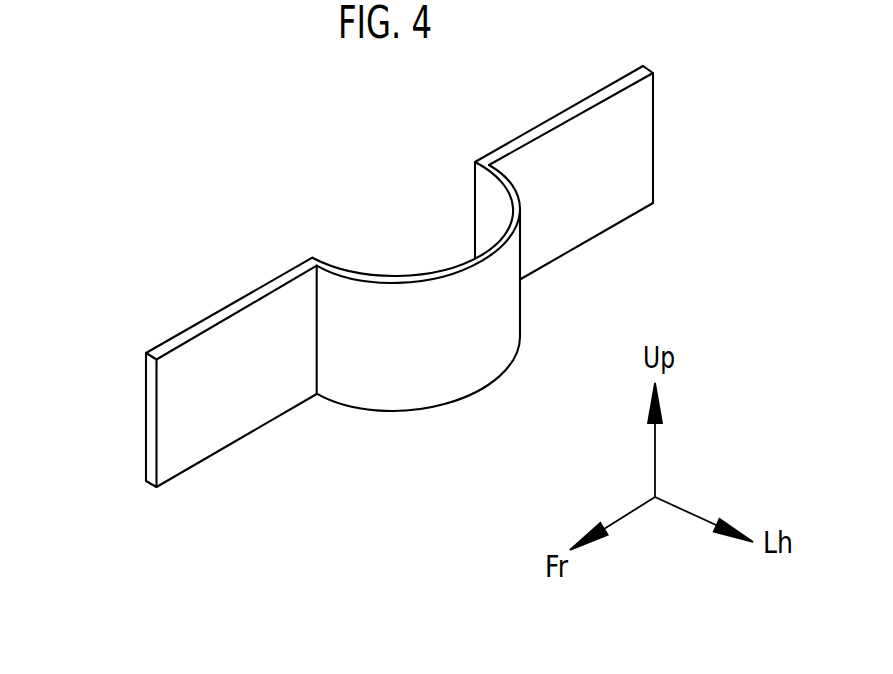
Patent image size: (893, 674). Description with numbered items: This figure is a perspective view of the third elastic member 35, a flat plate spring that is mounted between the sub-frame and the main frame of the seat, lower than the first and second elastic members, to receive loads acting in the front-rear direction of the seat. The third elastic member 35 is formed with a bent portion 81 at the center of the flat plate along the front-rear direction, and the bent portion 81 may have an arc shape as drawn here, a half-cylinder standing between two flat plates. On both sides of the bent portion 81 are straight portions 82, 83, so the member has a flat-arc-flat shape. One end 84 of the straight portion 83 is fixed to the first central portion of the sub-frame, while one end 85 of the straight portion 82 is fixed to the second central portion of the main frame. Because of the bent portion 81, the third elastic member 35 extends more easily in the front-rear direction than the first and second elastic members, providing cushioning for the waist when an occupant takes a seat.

The third elastic member 35 is at (134, 261).
The bent portion 81 is at (457, 270).
The straight portion 82 is at (233, 309).
The straight portion 83 is at (538, 127).
The one end of the straight portion 84 is at (654, 146).
The one end of the straight portion 85 is at (150, 431).